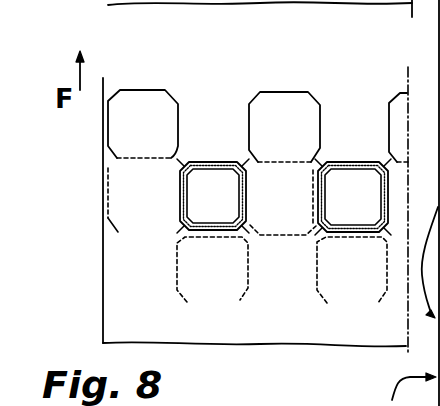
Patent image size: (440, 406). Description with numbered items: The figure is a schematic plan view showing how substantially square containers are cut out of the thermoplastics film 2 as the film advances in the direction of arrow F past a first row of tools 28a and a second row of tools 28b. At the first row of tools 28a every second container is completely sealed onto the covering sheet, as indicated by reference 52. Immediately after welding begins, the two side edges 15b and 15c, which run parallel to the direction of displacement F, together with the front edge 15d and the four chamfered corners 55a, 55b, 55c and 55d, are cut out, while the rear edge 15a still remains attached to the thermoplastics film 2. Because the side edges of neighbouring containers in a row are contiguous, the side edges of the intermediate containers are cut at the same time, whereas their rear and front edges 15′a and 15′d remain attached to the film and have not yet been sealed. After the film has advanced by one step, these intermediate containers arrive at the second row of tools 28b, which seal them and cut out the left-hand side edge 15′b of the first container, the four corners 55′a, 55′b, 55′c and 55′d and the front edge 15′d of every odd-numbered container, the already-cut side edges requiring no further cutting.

The thermoplastics film 2 is at (112, 323).
The first row of tools 28a is at (92, 203).
The second row of tools 28b is at (92, 133).
The completely sealed container 52 is at (204, 167).
The rear edge of container 15a is at (218, 237).
The side edge of container 15b is at (178, 199).
The side edge of container 15c is at (249, 200).
The front edge of container 15d is at (198, 158).
The rear edge of intermediate container 15′a is at (130, 161).
The left-hand side edge of intermediate container 15′b is at (108, 107).
The front edge of intermediate container 15′d is at (137, 90).
The chamfered corner 55a is at (176, 233).
The chamfered corner 55b is at (246, 229).
The chamfered corner 55c is at (250, 165).
The chamfered corner 55d is at (177, 164).
The corner of intermediate container 55′a is at (145, 143).
The corner of intermediate container 55′b is at (171, 150).
The corner of intermediate container 55′c is at (177, 97).
The corner of intermediate container 55′d is at (113, 90).